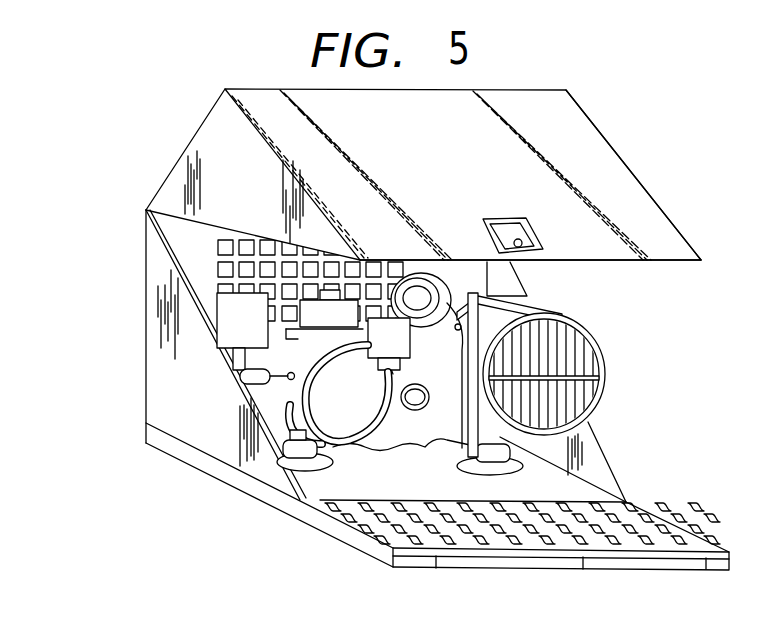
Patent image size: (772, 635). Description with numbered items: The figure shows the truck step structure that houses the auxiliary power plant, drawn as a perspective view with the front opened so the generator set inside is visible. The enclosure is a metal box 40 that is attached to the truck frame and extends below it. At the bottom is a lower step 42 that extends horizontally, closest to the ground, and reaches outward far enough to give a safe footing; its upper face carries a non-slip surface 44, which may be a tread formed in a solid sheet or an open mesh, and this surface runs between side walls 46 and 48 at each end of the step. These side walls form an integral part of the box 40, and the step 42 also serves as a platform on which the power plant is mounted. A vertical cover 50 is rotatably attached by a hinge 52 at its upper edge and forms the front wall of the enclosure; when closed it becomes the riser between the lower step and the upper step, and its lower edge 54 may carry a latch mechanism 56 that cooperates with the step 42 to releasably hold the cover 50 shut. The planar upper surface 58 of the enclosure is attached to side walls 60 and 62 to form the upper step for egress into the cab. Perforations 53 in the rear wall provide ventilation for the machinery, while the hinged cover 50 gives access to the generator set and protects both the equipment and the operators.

The box 40 is at (90, 300).
The lower step 42 is at (388, 572).
The non-slip surface 44 is at (335, 518).
The side wall 46 is at (165, 415).
The side wall 48 is at (608, 446).
The vertical cover 50 is at (601, 184).
The hinge 52 is at (146, 213).
The perforations 53 is at (213, 273).
The lower edge 54 is at (688, 262).
The latch mechanism 56 is at (530, 231).
The upper surface 58 is at (200, 125).
The side wall 60 is at (185, 177).
The side wall 62 is at (586, 110).